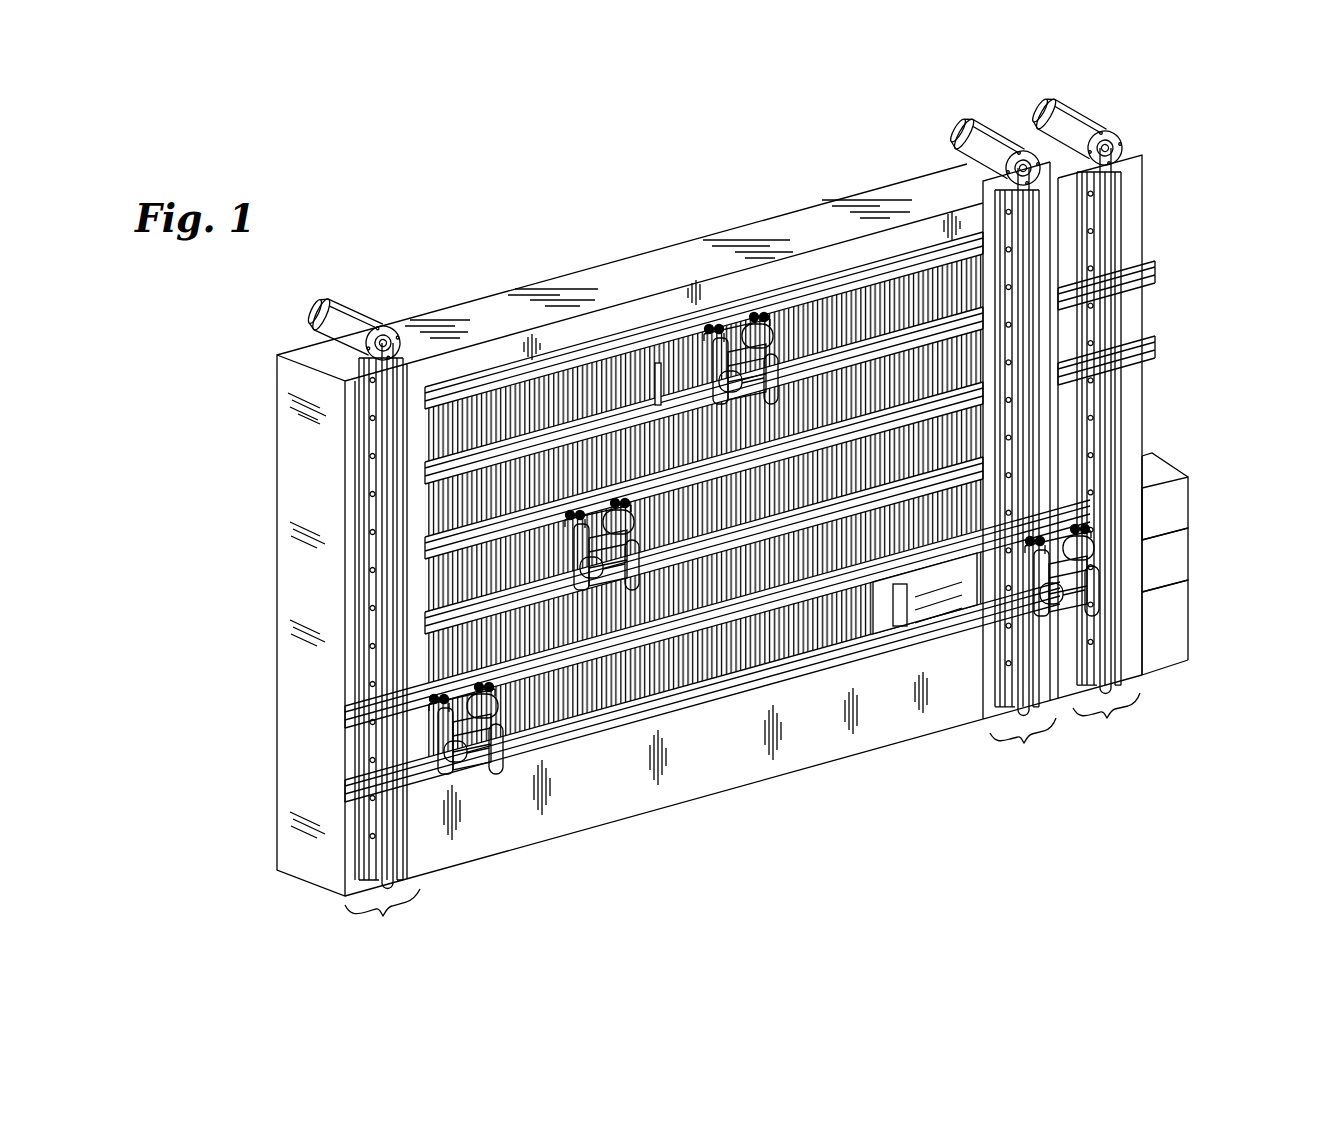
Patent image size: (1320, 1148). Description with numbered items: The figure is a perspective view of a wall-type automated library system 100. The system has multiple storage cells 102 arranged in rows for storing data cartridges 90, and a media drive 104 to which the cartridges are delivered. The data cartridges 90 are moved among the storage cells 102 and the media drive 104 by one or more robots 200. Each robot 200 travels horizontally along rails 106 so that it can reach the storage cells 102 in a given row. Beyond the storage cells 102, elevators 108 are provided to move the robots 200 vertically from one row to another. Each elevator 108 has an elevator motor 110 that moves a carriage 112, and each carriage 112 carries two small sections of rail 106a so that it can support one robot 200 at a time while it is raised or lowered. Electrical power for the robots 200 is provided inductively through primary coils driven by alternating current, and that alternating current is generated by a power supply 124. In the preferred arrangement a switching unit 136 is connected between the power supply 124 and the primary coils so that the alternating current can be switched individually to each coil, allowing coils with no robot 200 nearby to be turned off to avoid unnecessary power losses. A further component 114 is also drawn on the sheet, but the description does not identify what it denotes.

The automated library system 100 is at (490, 158).
The data cartridge 90 is at (660, 362).
The storage cell 102 is at (620, 383).
The media drive 104 is at (933, 612).
The rail 106 is at (340, 470).
The small section of rail 106a is at (1158, 344).
The elevator 108 is at (742, 544).
The elevator motor 110 is at (1080, 108).
The carriage 112 is at (1105, 325).
The control module 114 is at (1178, 514).
The power supply 124 is at (1178, 624).
The switching unit 136 is at (1178, 555).
The robot 200 is at (766, 322).